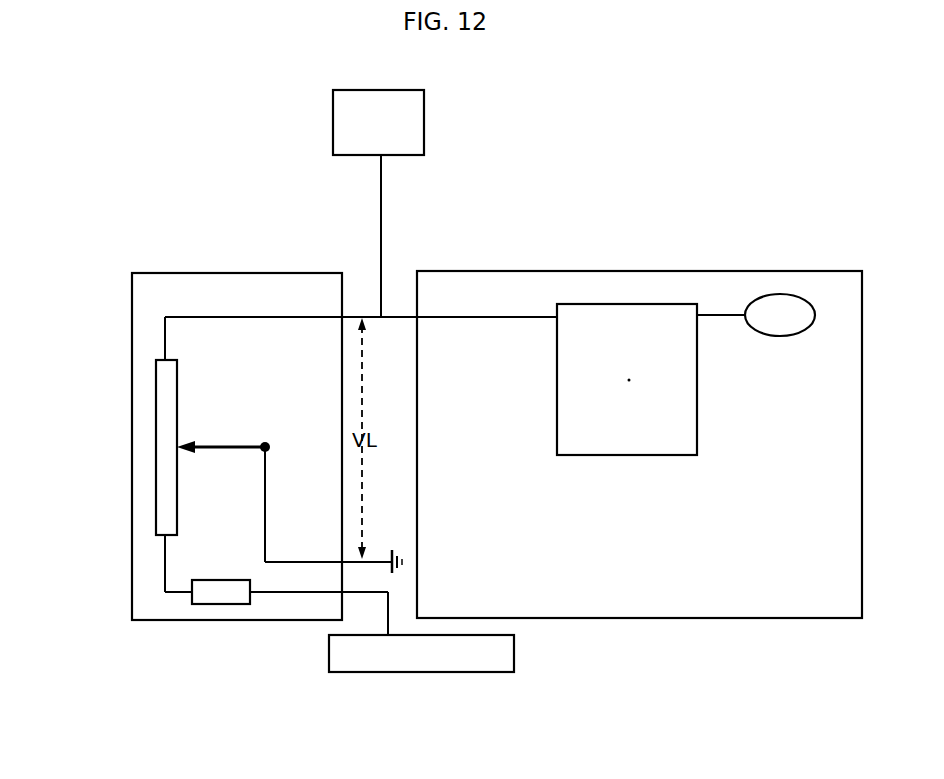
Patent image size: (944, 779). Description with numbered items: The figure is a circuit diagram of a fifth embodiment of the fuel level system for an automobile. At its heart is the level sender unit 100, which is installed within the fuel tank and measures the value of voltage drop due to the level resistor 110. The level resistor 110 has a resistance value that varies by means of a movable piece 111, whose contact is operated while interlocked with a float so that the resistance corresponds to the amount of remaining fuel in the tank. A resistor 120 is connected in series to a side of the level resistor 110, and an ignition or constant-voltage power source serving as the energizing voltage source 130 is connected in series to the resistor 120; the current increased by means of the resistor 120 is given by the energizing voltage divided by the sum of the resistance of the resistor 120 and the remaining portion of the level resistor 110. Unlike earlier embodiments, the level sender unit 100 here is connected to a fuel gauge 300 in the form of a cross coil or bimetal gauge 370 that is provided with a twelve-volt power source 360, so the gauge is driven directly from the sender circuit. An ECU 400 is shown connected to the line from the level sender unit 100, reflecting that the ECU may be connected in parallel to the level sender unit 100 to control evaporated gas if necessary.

The level sender unit 100 is at (238, 262).
The level resistor 110 is at (163, 502).
The movable piece 111 is at (235, 452).
The resistor 120 is at (225, 604).
The energizing voltage source 130 is at (490, 673).
The fuel gauge 300 is at (492, 262).
The 12V power source 360 is at (780, 294).
The cross coil or bimetal gauge 370 is at (606, 304).
The ECU 400 is at (424, 114).